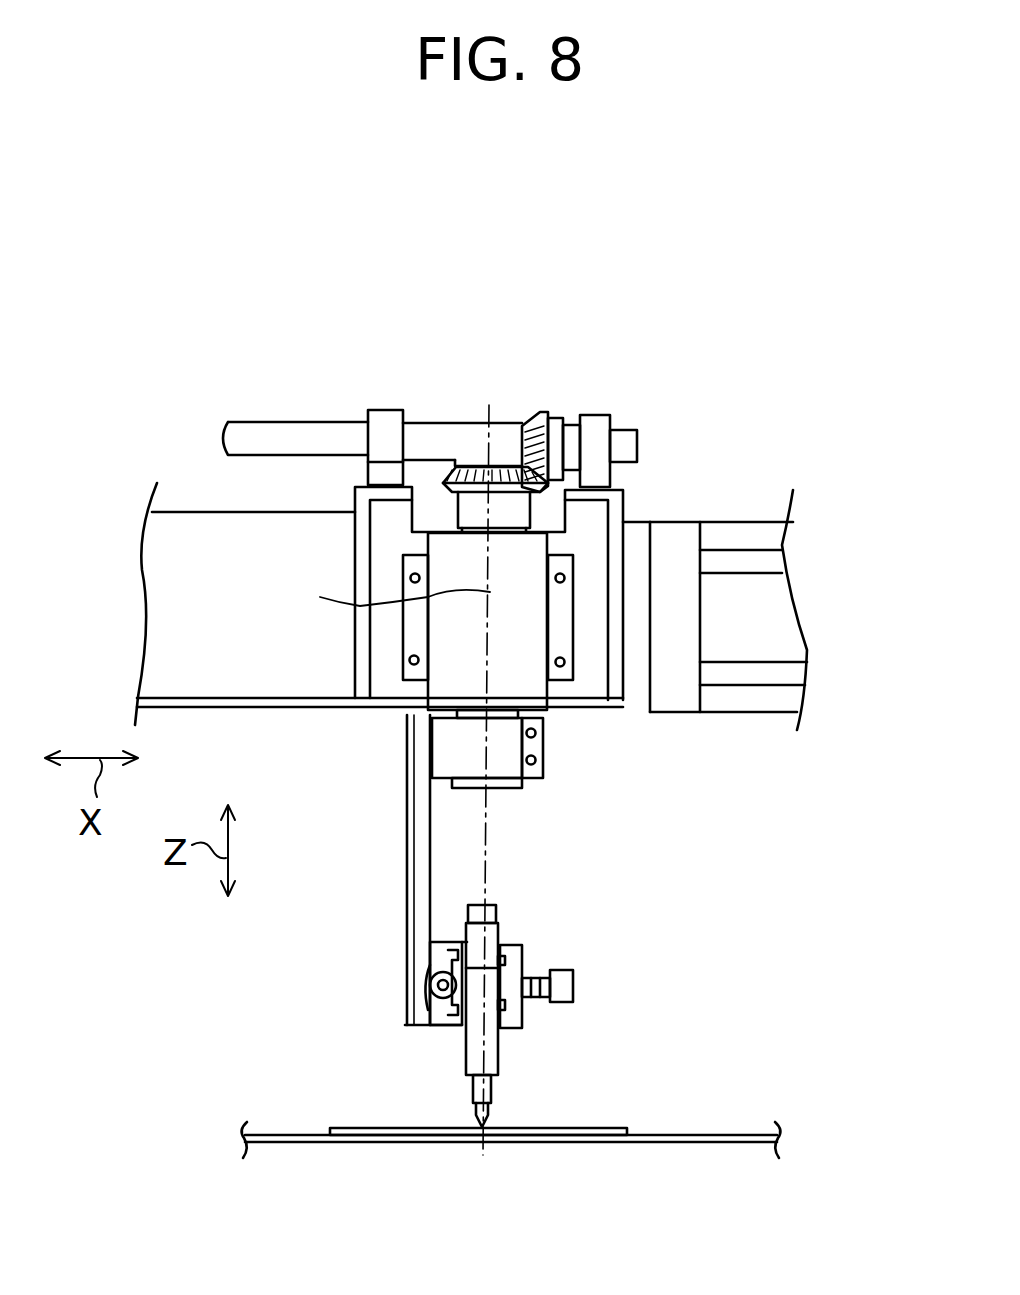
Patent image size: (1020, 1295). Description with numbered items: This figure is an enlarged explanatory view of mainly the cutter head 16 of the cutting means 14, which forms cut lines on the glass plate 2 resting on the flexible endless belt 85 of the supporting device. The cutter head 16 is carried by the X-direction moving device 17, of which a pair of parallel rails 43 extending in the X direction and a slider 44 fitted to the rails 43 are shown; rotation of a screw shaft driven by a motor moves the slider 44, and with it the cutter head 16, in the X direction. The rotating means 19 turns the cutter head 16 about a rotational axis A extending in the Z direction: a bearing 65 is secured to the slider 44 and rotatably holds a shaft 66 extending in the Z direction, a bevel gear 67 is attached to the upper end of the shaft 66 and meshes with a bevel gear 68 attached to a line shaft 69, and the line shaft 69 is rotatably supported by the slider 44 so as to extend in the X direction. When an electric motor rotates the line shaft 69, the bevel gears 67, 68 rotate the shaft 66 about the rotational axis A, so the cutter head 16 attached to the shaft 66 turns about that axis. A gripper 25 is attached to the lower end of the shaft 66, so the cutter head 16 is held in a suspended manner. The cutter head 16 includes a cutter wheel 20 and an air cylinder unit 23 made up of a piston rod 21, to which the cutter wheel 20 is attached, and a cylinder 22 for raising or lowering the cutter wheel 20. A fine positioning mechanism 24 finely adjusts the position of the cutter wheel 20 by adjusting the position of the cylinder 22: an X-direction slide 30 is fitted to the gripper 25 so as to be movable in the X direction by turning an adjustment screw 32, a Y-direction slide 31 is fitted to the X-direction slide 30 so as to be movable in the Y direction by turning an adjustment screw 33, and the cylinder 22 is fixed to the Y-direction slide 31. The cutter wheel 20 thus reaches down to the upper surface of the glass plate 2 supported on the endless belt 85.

The glass plate 2 is at (370, 1128).
The cutting means 14 is at (600, 876).
The cutter head 16 is at (405, 853).
The X-direction moving device 17 is at (230, 548).
The rotating means 19 is at (520, 617).
The cutter wheel 20 is at (476, 1123).
The piston rod 21 is at (472, 1090).
The cylinder 22 is at (466, 1030).
The air cylinder unit 23 is at (490, 1050).
The fine positioning mechanism 24 is at (450, 940).
The gripper 25 is at (422, 755).
The X-direction slide 30 is at (508, 1027).
The Y-direction slide 31 is at (428, 1015).
The adjustment screw 32 is at (575, 985).
The adjustment screw 33 is at (428, 975).
The rails 43 is at (758, 567).
The slider 44 is at (260, 672).
The bearing 65 is at (533, 683).
The shaft 66 is at (503, 788).
The bevel gear 67 is at (455, 465).
The bevel gear 68 is at (536, 414).
The line shaft 69 is at (304, 425).
The endless belt 85 is at (718, 1135).
The rotational axis A is at (392, 597).